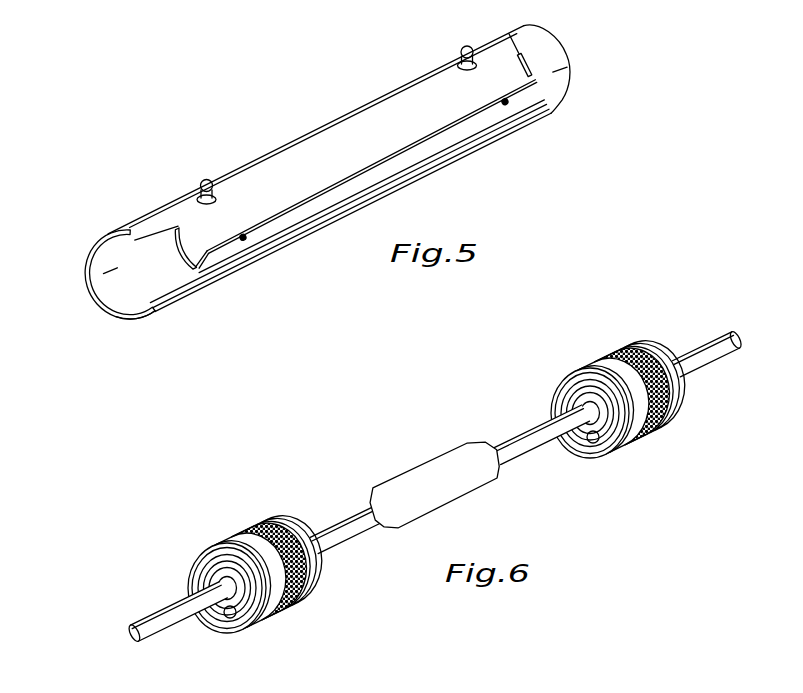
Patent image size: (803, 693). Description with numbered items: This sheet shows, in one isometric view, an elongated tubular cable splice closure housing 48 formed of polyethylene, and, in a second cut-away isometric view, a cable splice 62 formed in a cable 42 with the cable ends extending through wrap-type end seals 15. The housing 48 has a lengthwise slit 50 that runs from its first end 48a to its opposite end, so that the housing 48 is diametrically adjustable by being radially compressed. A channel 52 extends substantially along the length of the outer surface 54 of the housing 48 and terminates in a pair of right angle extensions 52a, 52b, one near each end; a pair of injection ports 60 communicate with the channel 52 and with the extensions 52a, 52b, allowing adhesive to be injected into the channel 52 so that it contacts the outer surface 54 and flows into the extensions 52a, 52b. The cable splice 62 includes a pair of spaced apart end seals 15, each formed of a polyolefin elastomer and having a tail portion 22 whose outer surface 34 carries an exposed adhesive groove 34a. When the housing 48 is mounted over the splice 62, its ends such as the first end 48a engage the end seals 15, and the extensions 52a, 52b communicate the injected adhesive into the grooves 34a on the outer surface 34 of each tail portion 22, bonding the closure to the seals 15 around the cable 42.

In FIG. 6, the end seal 15 is at (682, 325).
In FIG. 6, the tail portion 22 is at (562, 387).
In FIG. 6, the outer surface 34 is at (622, 447).
In FIG. 6, the adhesive groove 34a is at (623, 362).
In FIG. 6, the cable 42 is at (127, 636).
In FIG. 5, the cable splice closure housing 48 is at (230, 138).
In FIG. 5, the first end 48a is at (570, 58).
In FIG. 5, the lengthwise slit 50 is at (127, 310).
In FIG. 5, the channel 52 is at (460, 128).
In FIG. 5, the right angle extension 52a is at (188, 232).
In FIG. 5, the right angle extension 52b is at (513, 35).
In FIG. 5, the outer surface 54 is at (289, 152).
In FIG. 5, the injection port 60 is at (507, 103).
In FIG. 6, the cable splice 62 is at (420, 468).